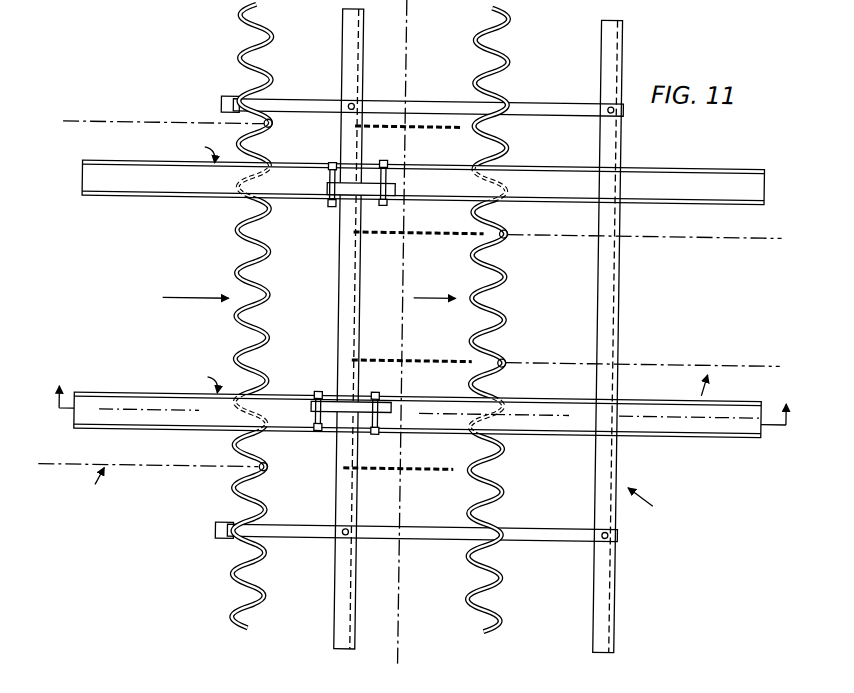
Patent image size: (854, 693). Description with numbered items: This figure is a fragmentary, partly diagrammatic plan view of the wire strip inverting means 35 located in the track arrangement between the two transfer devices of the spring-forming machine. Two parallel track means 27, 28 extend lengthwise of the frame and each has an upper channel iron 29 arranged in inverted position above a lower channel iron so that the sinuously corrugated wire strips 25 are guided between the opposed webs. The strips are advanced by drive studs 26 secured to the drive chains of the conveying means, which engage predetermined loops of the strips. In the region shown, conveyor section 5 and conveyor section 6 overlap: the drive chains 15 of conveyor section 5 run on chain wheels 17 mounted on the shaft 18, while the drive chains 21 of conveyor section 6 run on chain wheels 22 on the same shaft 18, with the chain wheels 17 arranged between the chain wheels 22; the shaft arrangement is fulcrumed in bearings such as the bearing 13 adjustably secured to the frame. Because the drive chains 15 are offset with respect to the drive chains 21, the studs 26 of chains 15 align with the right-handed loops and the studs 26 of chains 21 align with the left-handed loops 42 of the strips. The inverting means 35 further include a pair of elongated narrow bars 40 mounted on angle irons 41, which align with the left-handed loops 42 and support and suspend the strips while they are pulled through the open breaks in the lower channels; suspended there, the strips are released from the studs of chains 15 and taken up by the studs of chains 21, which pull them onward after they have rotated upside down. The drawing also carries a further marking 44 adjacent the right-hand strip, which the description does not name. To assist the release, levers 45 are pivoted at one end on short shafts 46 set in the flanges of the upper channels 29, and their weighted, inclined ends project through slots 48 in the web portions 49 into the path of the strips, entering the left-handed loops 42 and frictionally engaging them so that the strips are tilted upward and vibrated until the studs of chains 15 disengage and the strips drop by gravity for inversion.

The conveyor section 5 is at (95, 487).
The conveyor section 6 is at (707, 387).
The bearing 13 is at (423, 393).
The drive chain 15 is at (122, 121).
The chain wheel 17 is at (432, 131).
The shaft 18 is at (405, 80).
The drive chain 21 is at (684, 238).
The chain wheel 22 is at (410, 228).
The sinuously corrugated wire strip 25 is at (234, 256).
The drive stud 26 is at (259, 127).
The track means 27 is at (197, 151).
The track means 28 is at (201, 380).
The upper channel iron 29 is at (143, 198).
The wire strip inverting means 35 is at (654, 505).
The elongated narrow bar 40 is at (534, 102).
The angle iron 41 is at (341, 65).
The left-handed loop 42 is at (236, 101).
The sinuous spring 44 is at (486, 239).
The lever 45 is at (345, 198).
The short shaft 46 is at (326, 192).
The slot 48 is at (331, 171).
The web portion 49 is at (226, 196).